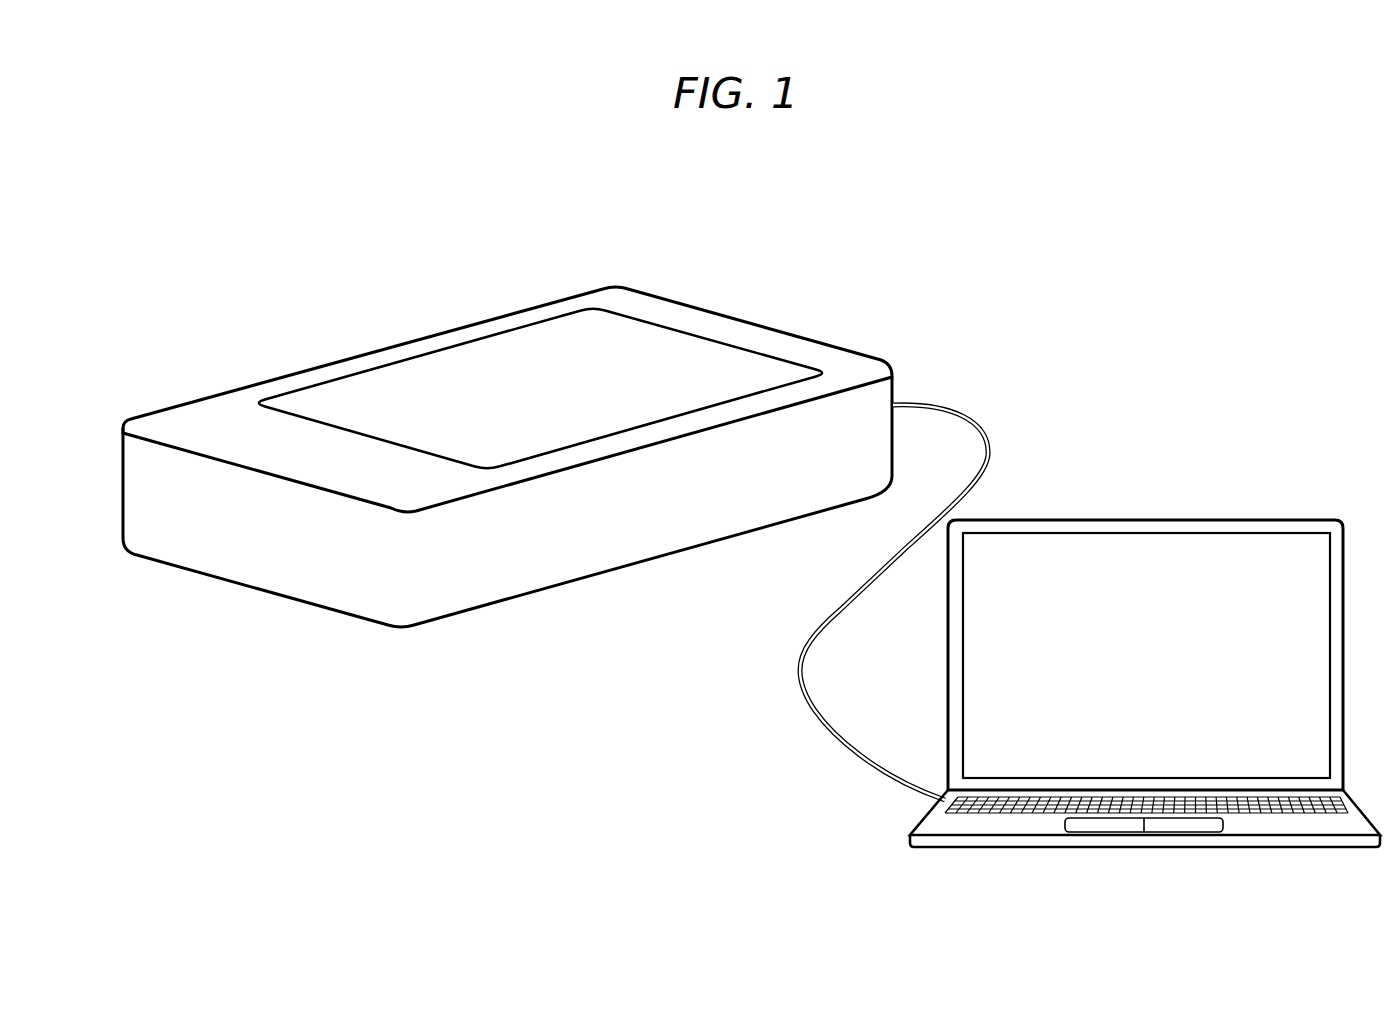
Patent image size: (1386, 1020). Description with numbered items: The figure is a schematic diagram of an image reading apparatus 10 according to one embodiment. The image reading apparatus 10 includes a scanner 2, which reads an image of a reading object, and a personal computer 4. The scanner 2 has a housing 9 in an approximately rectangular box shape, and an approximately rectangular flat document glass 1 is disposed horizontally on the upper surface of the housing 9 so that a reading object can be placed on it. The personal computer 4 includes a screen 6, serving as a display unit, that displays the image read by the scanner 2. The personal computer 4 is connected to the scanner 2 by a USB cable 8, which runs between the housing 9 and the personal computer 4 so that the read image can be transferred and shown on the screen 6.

The document glass 1 is at (425, 373).
The scanner 2 is at (783, 293).
The personal computer 4 is at (1108, 483).
The screen 6 is at (1265, 550).
The USB cable 8 is at (800, 672).
The housing 9 is at (138, 492).
The image reading apparatus 10 is at (887, 196).